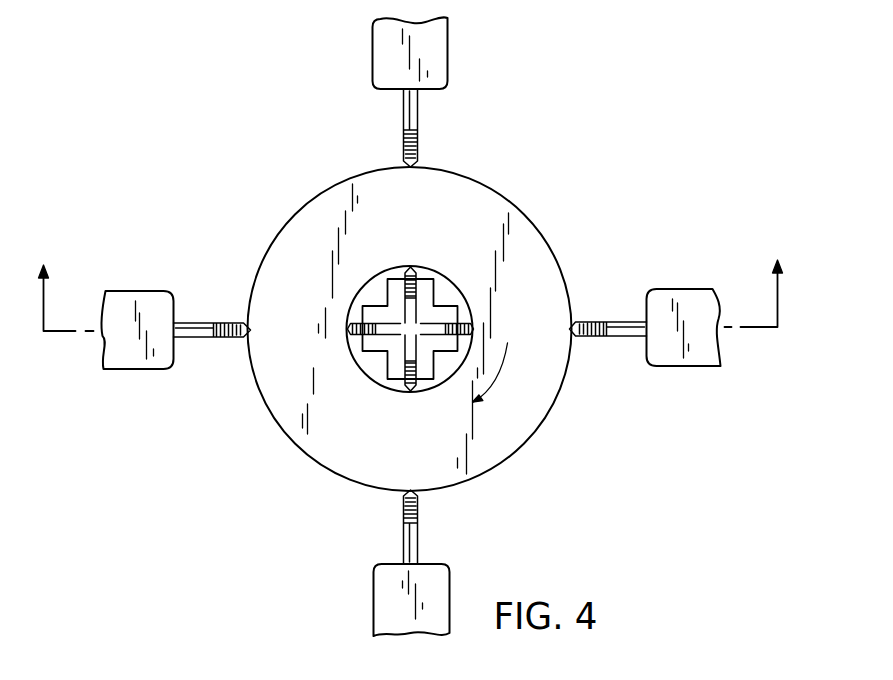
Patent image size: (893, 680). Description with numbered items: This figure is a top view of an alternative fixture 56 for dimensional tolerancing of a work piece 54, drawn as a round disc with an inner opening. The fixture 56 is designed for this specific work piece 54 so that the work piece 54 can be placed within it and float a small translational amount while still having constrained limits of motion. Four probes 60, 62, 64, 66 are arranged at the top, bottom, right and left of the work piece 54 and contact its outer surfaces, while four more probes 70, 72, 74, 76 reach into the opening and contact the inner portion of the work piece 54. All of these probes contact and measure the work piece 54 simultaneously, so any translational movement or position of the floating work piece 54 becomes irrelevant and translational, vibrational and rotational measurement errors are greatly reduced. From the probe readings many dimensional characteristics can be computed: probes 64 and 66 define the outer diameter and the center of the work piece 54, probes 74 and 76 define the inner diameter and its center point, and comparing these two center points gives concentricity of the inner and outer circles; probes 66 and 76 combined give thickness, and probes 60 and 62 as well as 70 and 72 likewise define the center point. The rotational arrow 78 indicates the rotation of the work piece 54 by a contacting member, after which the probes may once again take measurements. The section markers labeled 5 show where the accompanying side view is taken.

The work piece 54 is at (525, 443).
The fixture 56 is at (447, 45).
The probe 60 is at (400, 108).
The probe 62 is at (422, 545).
The probe 64 is at (627, 335).
The probe 66 is at (193, 322).
The probe 70 is at (400, 307).
The probe 72 is at (395, 347).
The probe 74 is at (428, 337).
The probe 76 is at (390, 340).
The rotational arrow 78 is at (498, 372).
The section line 5- 5 is at (411, 313).